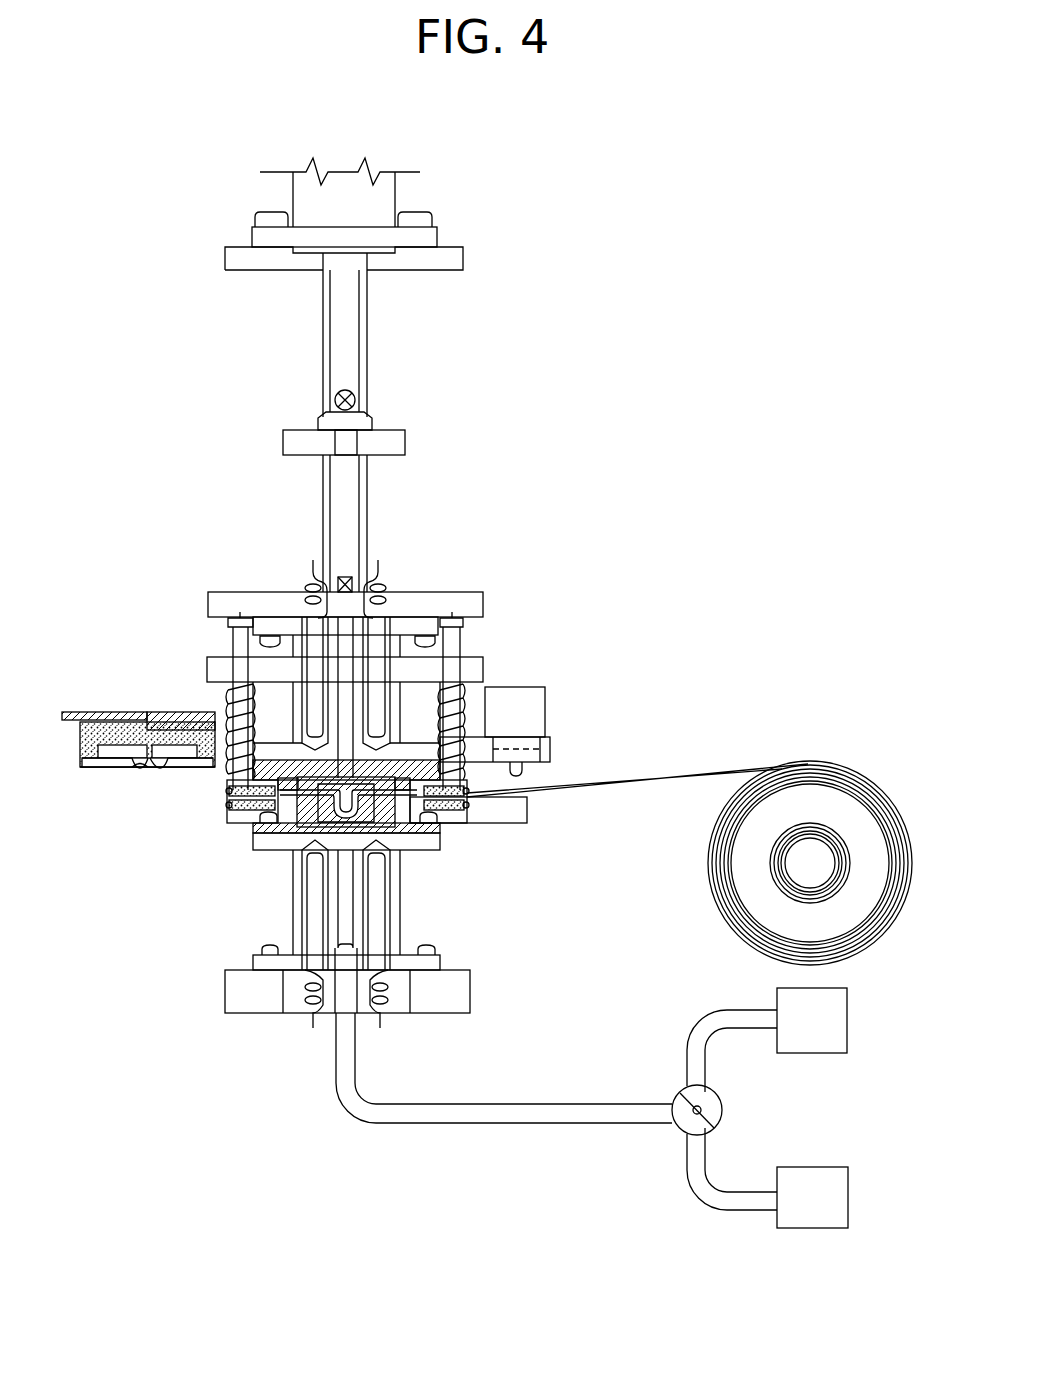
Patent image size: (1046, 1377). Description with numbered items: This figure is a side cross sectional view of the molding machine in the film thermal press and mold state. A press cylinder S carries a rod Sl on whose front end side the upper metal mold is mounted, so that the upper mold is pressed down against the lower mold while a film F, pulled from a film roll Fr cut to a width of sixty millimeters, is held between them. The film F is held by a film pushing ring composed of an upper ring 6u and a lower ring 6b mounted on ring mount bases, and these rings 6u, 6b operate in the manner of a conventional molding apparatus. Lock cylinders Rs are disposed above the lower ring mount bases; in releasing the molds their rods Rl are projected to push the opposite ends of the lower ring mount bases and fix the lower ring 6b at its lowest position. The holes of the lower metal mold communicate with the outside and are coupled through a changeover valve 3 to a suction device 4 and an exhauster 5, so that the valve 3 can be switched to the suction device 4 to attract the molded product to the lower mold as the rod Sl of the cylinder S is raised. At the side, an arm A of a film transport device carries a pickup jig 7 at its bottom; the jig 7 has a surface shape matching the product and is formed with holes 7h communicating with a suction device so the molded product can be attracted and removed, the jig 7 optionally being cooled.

The press cylinder S is at (395, 190).
The rod of the press cylinder Sl is at (353, 340).
The arm A is at (160, 712).
The pickup jig 7 is at (113, 763).
The holes 7h is at (150, 768).
The upper ring 6u is at (228, 795).
The lower ring 6b is at (445, 808).
The lock cylinders Rs is at (537, 700).
The rods of the lock cylinders Rl is at (518, 768).
The film F is at (668, 777).
The film roll Fr is at (848, 808).
The changeover valve 3 is at (722, 1106).
The suction device 4 is at (840, 1183).
The exhauster 5 is at (840, 1000).